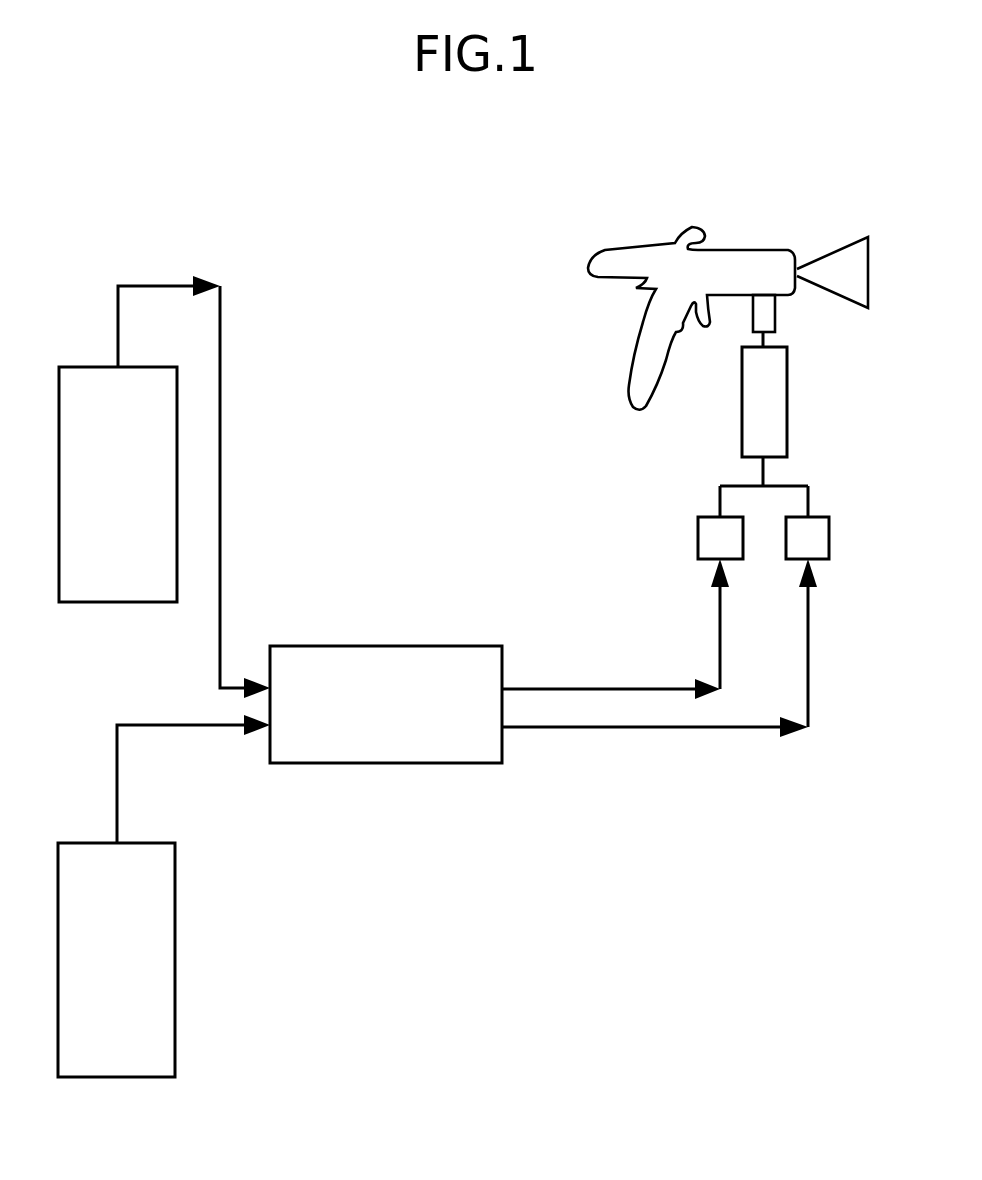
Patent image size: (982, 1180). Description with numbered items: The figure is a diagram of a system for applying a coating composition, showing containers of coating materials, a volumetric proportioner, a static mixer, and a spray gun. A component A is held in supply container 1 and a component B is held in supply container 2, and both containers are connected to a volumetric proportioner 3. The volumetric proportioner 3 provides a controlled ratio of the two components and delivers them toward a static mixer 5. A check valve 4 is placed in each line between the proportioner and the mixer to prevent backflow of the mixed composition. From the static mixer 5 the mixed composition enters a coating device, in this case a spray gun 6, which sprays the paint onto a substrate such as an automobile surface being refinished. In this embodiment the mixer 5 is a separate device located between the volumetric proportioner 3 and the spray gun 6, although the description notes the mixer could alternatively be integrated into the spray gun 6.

The supply container 1 is at (97, 366).
The supply container 2 is at (90, 842).
The volumetric proportioner 3 is at (393, 646).
The check valve 4 is at (698, 545).
The static mixer 5 is at (788, 405).
The spray gun 6 is at (630, 352).